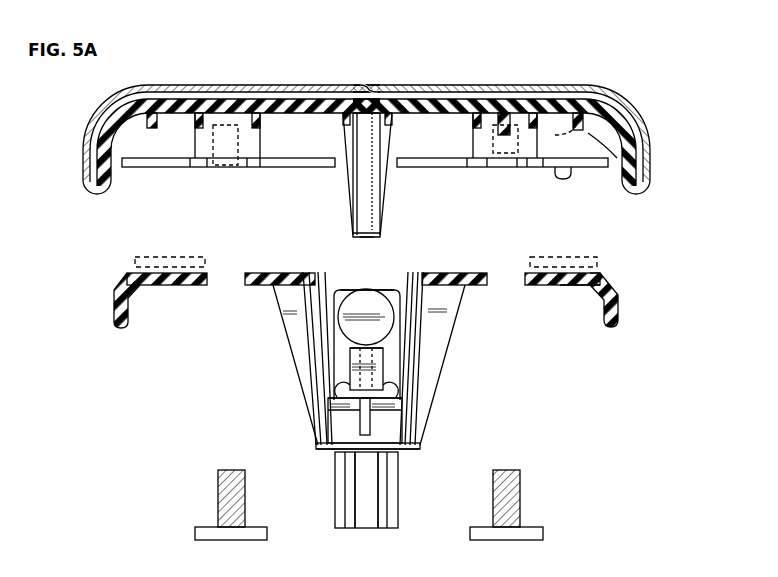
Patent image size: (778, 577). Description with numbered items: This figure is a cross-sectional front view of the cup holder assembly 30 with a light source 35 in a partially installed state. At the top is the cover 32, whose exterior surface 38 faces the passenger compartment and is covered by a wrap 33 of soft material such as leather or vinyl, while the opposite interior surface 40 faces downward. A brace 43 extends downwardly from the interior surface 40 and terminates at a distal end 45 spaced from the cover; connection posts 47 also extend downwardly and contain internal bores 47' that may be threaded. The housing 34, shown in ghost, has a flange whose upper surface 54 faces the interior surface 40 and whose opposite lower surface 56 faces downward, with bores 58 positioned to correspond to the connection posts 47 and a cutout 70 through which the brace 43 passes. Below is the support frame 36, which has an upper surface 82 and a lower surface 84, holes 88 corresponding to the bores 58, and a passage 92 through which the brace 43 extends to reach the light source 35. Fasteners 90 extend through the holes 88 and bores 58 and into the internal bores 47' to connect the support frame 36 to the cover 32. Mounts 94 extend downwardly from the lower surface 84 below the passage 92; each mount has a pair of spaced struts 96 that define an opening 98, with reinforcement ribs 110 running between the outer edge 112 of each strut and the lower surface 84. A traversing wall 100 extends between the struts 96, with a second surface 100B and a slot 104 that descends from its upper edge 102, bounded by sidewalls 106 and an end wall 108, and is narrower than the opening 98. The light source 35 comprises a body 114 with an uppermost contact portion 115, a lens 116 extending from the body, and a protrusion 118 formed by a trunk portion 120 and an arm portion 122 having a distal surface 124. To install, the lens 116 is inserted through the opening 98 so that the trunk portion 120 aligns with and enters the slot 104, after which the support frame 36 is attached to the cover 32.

The cup holder assembly 30 is at (683, 117).
The cover 32 is at (615, 97).
The wrap 33 is at (548, 85).
The housing 34 is at (602, 172).
The light source 35 is at (402, 495).
The support frame 36 is at (620, 292).
The exterior surface 38 is at (460, 100).
The interior surface 40 is at (437, 122).
The brace 43 is at (358, 132).
The distal end 45 is at (362, 243).
The connection post 47 is at (360, 105).
The internal bore 47' is at (576, 91).
The upper surface 54 is at (597, 150).
The lower surface 56 is at (565, 167).
The bore 58 is at (190, 165).
The cutout 70 is at (343, 165).
The upper surface 82 is at (597, 273).
The lower surface 84 is at (580, 287).
The hole 88 is at (225, 280).
The fastener 90 is at (216, 503).
The passage 92 is at (397, 285).
The mount 94 is at (280, 323).
The strut 96 is at (336, 348).
The opening 98 is at (278, 317).
The traversing wall 100 is at (385, 428).
The second surface 100B is at (333, 458).
The upper edge 102 is at (402, 390).
The slot 104 is at (376, 406).
The sidewall 106 is at (352, 428).
The end wall 108 is at (372, 440).
The reinforcement rib 110 is at (280, 295).
The outer edge 112 is at (313, 353).
The body 114 is at (382, 517).
The contact portion 115 is at (352, 288).
The lens 116 is at (368, 300).
The protrusion 118 is at (392, 372).
The trunk portion 120 is at (335, 398).
The arm portion 122 is at (348, 386).
The distal surface 124 is at (380, 350).